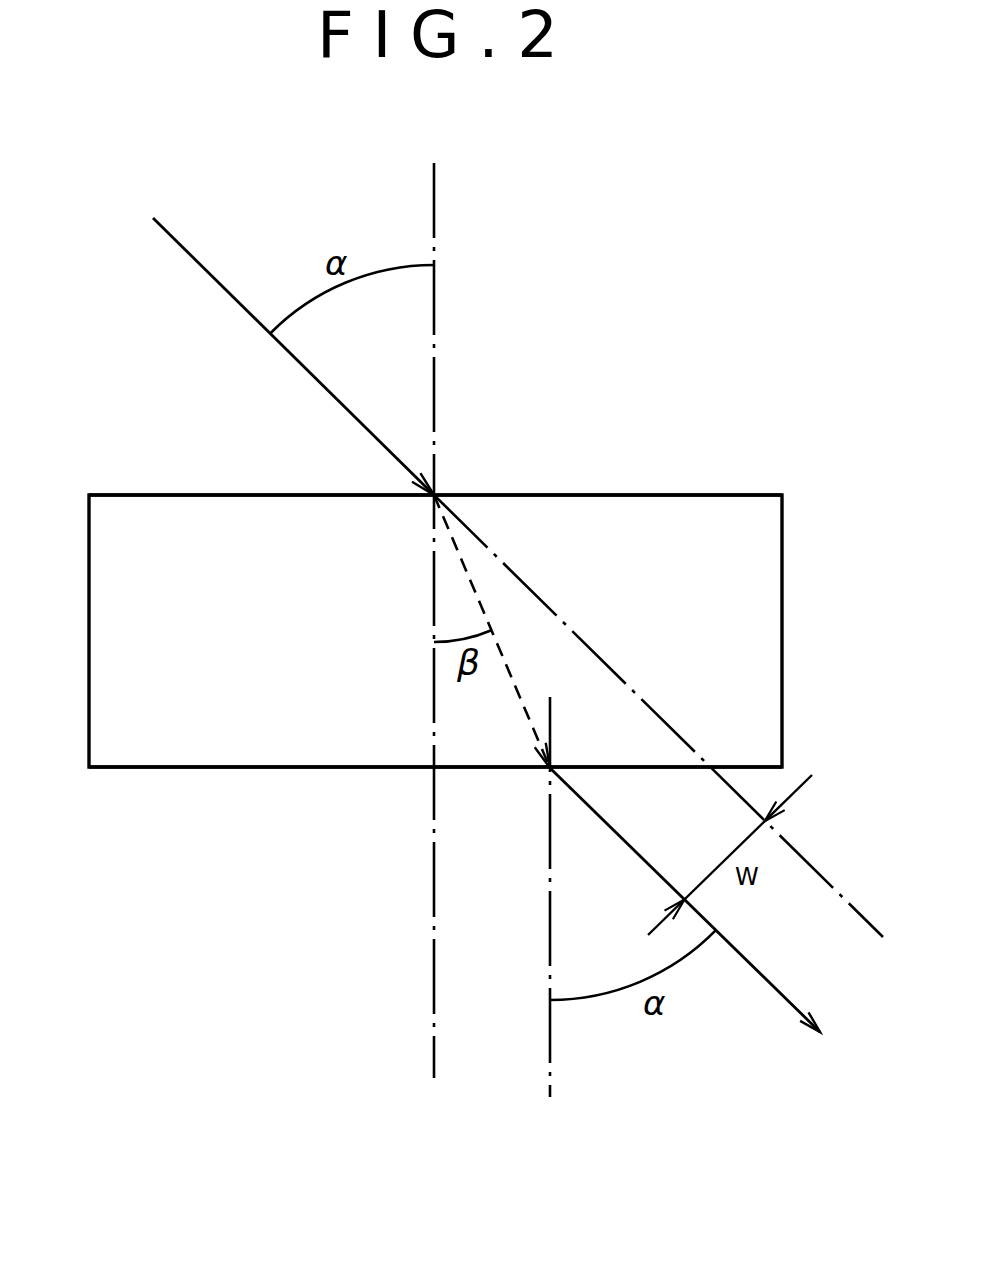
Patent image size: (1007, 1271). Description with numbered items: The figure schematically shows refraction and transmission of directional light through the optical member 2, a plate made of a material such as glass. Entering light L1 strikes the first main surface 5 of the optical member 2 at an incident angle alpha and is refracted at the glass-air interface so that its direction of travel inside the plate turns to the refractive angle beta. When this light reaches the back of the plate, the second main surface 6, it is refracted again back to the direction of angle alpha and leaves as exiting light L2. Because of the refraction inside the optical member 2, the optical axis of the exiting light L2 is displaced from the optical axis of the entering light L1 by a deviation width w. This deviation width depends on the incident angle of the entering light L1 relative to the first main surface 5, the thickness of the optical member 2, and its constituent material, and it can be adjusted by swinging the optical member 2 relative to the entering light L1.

The optical member 2 is at (87, 340).
The first main surface 5 is at (160, 497).
The second main surface 6 is at (160, 767).
The entering light L1 is at (208, 272).
The exiting light L2 is at (768, 978).